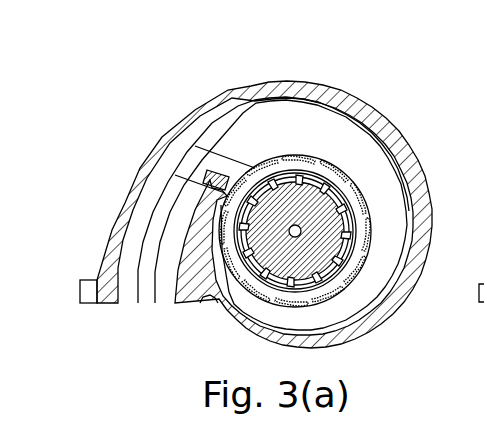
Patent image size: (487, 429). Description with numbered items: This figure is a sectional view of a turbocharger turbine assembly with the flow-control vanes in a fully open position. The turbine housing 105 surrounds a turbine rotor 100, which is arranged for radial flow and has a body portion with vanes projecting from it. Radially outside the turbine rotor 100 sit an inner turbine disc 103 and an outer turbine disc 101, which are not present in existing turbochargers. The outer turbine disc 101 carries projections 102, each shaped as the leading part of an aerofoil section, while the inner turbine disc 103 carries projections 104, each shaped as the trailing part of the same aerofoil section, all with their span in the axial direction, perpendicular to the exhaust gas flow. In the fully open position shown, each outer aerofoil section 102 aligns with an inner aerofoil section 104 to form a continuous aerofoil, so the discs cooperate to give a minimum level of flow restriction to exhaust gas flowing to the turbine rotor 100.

The turbine rotor 100 is at (258, 168).
The outer turbine disc 101 is at (357, 187).
The projections on the outer disc 102 is at (342, 183).
The inner turbine disc 103 is at (327, 293).
The projections on the inner disc 104 is at (283, 197).
The turbine housing 105 is at (340, 132).